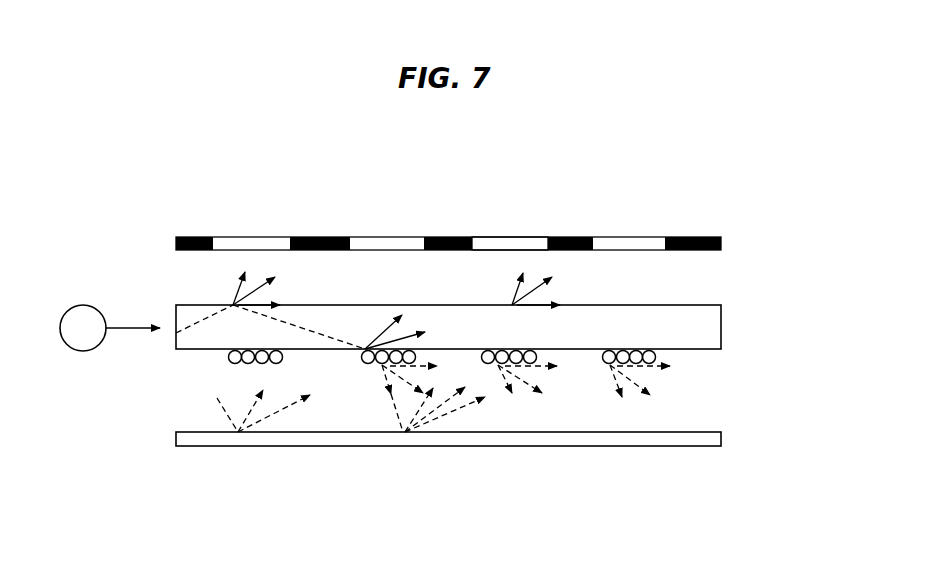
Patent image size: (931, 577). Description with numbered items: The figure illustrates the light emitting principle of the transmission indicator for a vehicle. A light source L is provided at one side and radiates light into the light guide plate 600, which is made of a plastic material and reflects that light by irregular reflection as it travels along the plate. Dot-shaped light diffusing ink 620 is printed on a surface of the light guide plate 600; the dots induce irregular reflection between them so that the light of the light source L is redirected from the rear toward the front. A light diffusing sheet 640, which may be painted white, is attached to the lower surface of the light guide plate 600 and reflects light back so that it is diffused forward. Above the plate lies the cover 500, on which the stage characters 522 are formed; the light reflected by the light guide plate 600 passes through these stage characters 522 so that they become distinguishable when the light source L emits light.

The cover 500 is at (647, 228).
The stage characters 522 is at (503, 237).
The light guide plate 600 is at (712, 323).
The light diffusing ink 620 is at (658, 356).
The light diffusing sheet 640 is at (527, 440).
The light source L is at (83, 316).